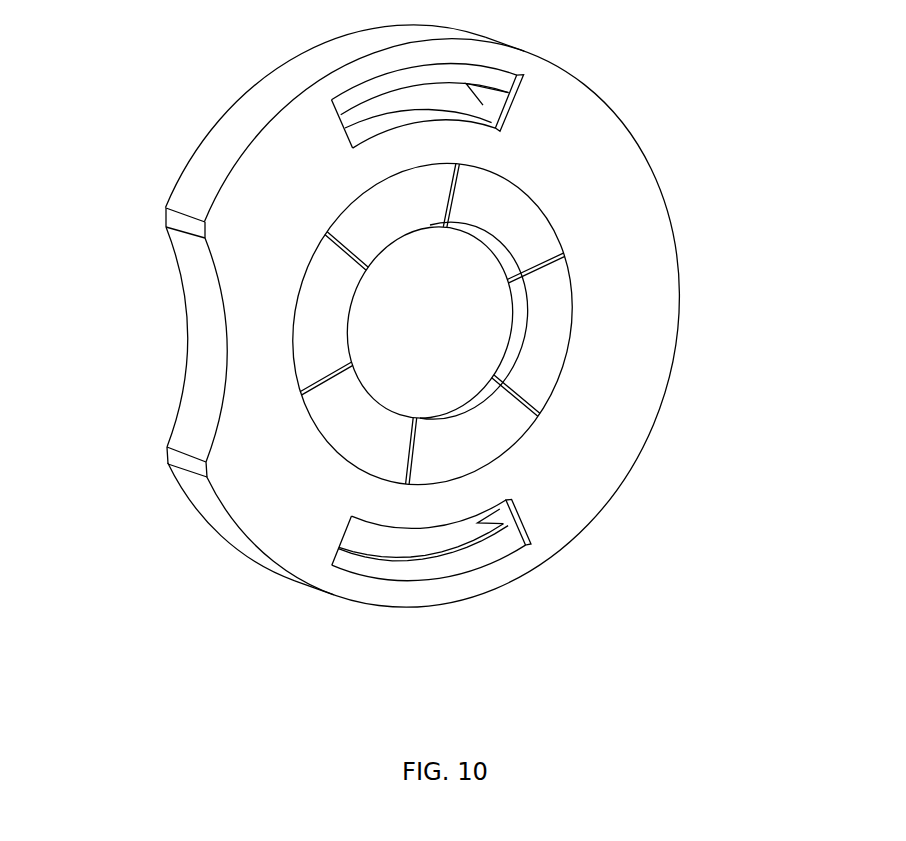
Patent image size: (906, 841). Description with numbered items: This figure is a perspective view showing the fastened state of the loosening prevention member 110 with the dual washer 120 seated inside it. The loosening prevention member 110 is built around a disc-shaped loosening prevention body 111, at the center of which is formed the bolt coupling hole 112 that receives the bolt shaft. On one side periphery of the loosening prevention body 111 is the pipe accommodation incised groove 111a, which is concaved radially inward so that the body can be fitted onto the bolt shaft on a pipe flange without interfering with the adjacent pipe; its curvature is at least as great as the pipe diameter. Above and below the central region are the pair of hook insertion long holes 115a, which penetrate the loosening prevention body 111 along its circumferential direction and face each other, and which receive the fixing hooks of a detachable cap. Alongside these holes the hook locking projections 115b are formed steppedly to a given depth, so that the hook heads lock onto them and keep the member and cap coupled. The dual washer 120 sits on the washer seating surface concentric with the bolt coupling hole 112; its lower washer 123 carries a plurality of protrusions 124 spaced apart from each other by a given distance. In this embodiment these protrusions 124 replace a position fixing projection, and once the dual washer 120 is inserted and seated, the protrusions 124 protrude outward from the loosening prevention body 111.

The loosening prevention member 110 is at (412, 363).
The loosening prevention body 111 is at (375, 363).
The pipe accommodation incised groove 111a is at (205, 335).
The bolt coupling hole 112 is at (429, 338).
The hook insertion long holes 115a is at (387, 542).
The hook locking projections 115b is at (455, 558).
The dual washer 120 is at (513, 323).
The lower washer 123 is at (547, 333).
The protrusions 124 is at (514, 278).